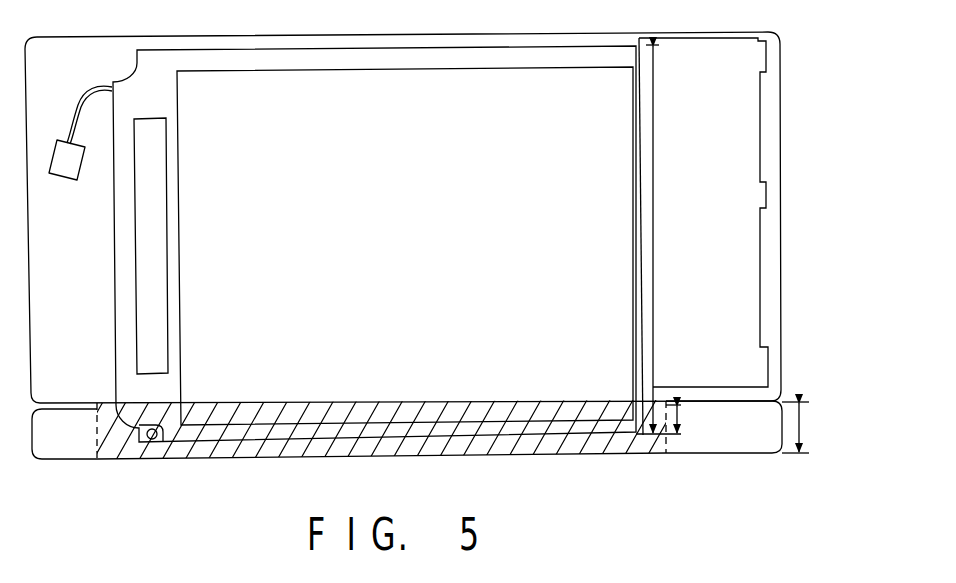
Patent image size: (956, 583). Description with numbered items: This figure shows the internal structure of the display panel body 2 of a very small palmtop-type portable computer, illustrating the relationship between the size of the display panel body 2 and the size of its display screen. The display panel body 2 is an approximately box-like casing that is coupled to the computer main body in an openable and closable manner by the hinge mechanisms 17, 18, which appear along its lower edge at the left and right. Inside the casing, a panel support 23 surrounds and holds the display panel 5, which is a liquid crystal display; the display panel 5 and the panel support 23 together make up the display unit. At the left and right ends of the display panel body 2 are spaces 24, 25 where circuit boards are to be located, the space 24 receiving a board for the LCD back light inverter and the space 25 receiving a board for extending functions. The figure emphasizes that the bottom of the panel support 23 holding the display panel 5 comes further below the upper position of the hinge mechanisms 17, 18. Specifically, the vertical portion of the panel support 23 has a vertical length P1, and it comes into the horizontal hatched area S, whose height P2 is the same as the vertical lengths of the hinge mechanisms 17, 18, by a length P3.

The display panel body 2 is at (792, 249).
The display panel 5 is at (440, 70).
The hinge mechanism 17 is at (67, 440).
The hinge mechanism 18 is at (733, 438).
The panel support 23 is at (335, 60).
The space 24 is at (50, 137).
The space 25 is at (742, 135).
The vertical length P1 is at (663, 239).
The height P2 is at (811, 427).
The length P3 is at (691, 421).
The horizontal area S is at (555, 447).